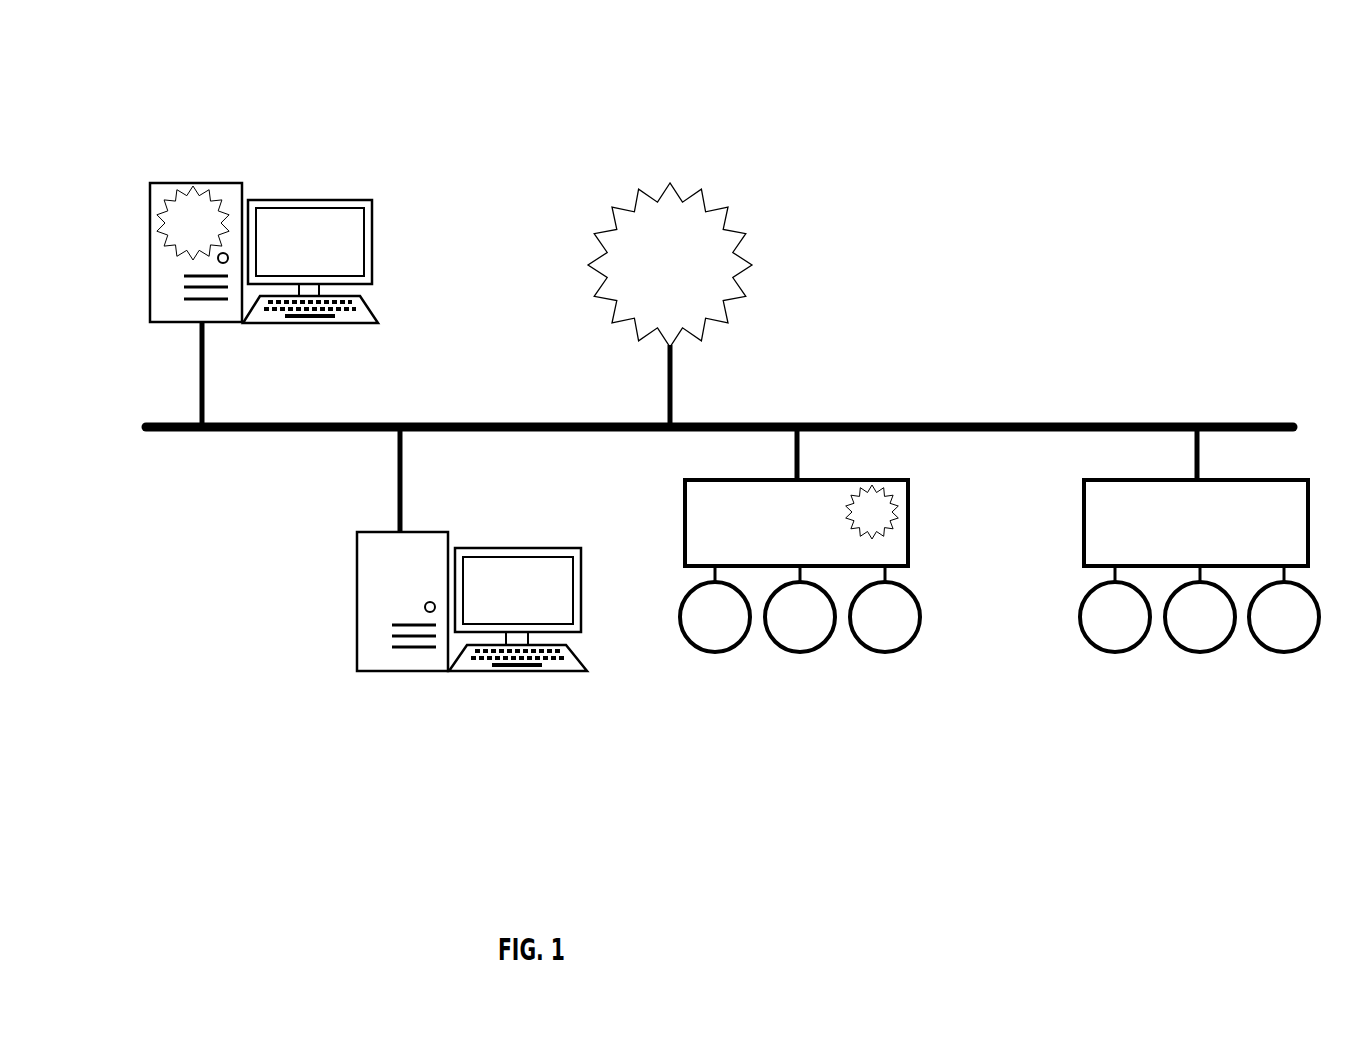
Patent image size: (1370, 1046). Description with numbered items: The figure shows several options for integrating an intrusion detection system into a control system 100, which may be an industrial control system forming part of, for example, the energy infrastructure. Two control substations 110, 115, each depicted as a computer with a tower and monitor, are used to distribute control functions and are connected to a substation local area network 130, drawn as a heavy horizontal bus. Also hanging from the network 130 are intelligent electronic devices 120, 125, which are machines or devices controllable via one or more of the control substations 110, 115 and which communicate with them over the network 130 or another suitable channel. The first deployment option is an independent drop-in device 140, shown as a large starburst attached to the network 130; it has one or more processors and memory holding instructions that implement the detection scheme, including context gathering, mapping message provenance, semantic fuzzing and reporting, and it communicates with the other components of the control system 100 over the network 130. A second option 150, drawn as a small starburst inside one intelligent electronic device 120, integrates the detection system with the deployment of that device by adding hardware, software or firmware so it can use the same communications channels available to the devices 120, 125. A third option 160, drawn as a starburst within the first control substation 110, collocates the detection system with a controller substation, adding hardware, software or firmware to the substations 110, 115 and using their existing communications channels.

The control system 100 is at (1158, 101).
The control substation 110 is at (258, 238).
The control substation 115 is at (460, 707).
The intelligent electronic device 120 is at (829, 608).
The intelligent electronic device 125 is at (1190, 688).
The substation local area network 130 is at (982, 422).
The independent drop-in device 140 is at (728, 220).
The intrusion detection system integrated with IED 150 is at (897, 501).
The collocated intrusion detection system 160 is at (175, 248).